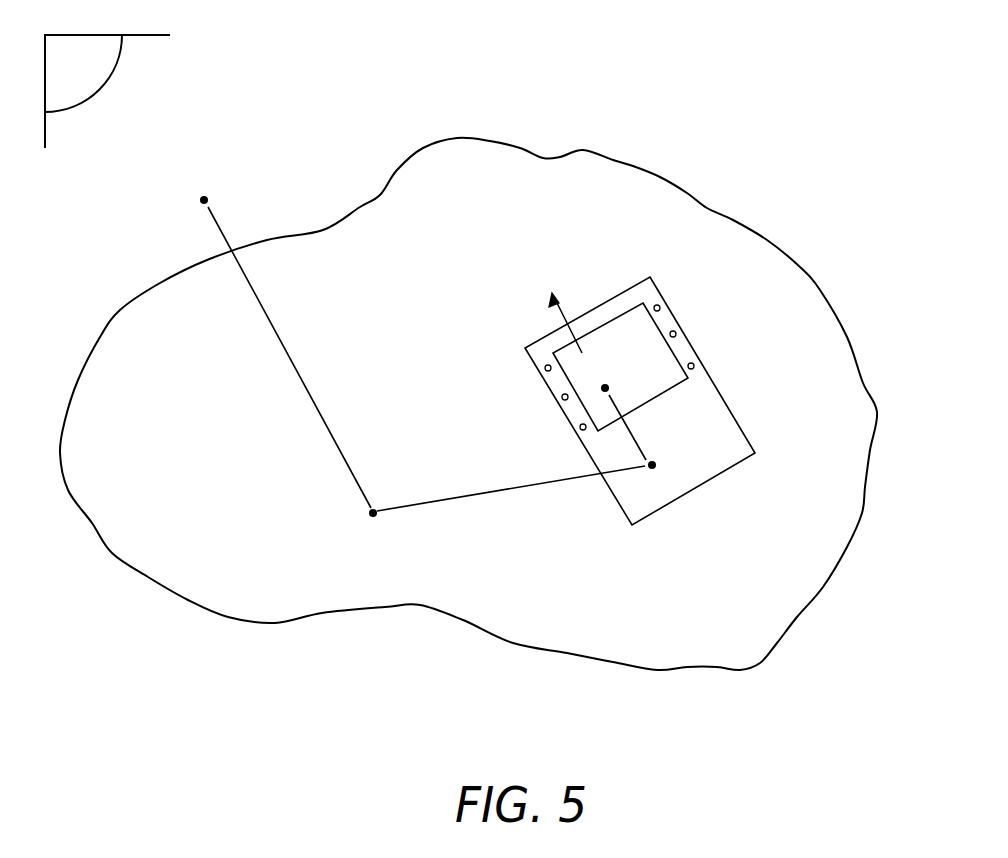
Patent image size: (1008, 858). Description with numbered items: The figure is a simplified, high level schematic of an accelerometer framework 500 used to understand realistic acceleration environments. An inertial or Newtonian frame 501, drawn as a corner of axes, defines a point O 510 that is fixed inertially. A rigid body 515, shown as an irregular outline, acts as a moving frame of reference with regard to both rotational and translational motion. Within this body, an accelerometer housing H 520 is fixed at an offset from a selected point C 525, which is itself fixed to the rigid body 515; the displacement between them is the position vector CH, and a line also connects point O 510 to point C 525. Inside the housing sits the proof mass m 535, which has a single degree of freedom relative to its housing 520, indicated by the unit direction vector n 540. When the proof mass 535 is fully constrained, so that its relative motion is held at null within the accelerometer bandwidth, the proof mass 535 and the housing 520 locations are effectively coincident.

The accelerometer framework 500 is at (712, 73).
The inertial or Newtonian frame 501 is at (122, 57).
The point O 510 is at (260, 345).
The rigid body 515 is at (708, 208).
The accelerometer housing H 520 is at (712, 485).
The point C 525 is at (506, 499).
The proof mass m 535 is at (652, 358).
The unit direction vector n 540 is at (560, 316).